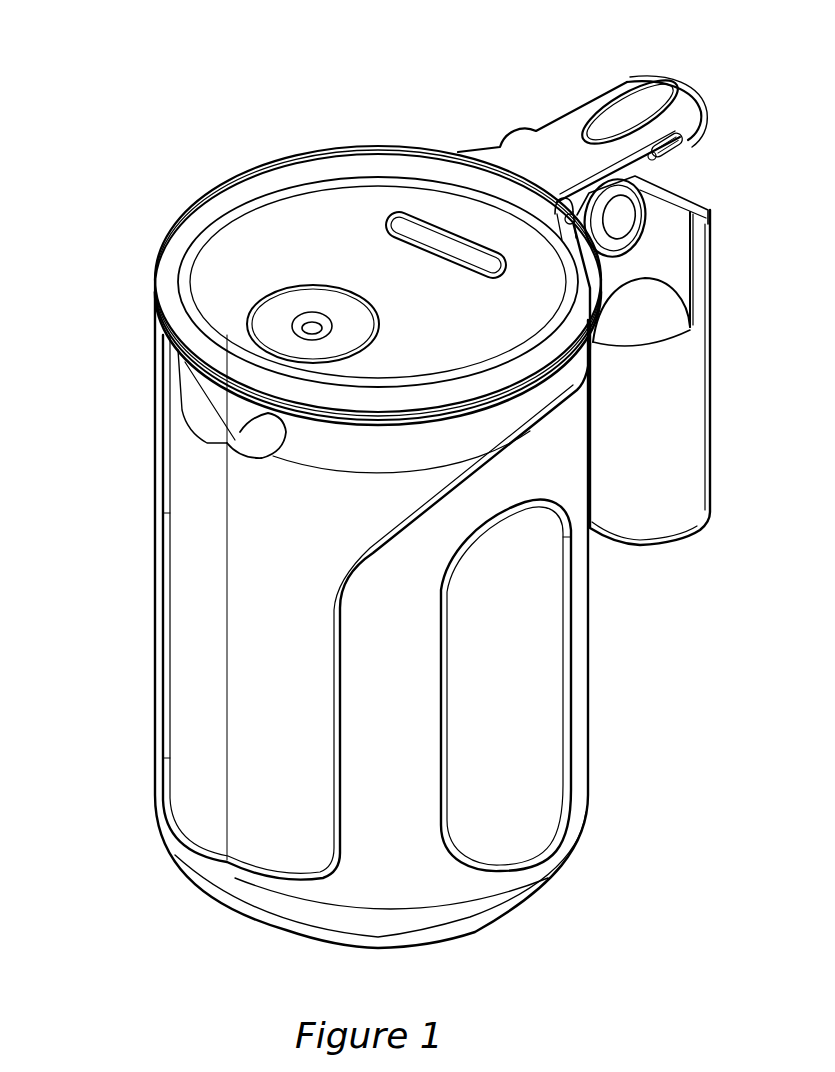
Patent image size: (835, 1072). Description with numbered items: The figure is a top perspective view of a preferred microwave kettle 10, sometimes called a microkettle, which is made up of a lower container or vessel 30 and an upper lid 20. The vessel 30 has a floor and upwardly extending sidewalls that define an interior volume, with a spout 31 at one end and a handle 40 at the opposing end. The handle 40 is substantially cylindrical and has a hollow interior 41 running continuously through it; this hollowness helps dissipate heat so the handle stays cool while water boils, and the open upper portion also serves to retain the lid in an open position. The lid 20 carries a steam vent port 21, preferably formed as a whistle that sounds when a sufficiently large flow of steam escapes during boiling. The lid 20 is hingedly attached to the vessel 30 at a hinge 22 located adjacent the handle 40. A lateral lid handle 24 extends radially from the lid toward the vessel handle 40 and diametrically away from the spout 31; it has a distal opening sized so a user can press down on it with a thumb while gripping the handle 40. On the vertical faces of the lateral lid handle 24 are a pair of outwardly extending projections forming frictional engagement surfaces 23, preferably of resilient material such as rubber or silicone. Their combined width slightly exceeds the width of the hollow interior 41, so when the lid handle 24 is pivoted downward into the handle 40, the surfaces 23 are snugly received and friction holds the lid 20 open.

The microwave kettle 10 is at (93, 190).
The lid 20 is at (303, 250).
The steam vent port 21 is at (300, 327).
The hinge 22 is at (518, 133).
The frictional engagement surfaces 23 is at (698, 101).
The lateral lid handle 24 is at (625, 82).
The vessel 30 is at (195, 656).
The spout 31 is at (195, 445).
The handle 40 is at (673, 470).
The hollow interior 41 is at (681, 175).